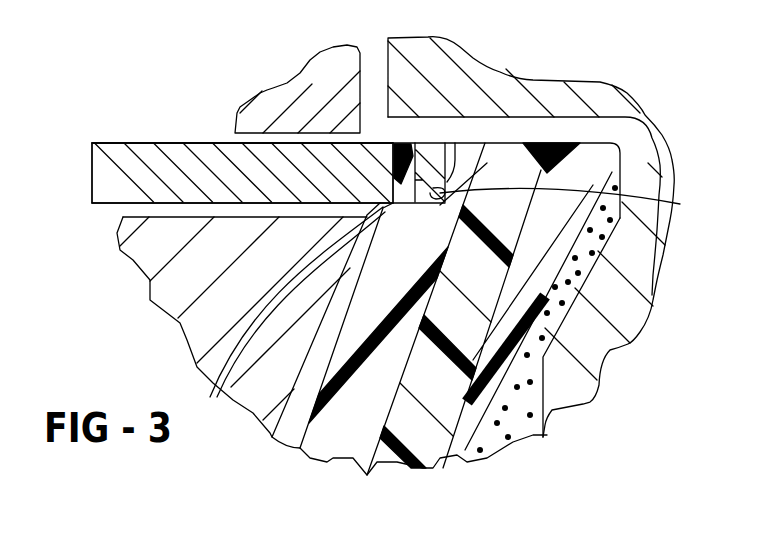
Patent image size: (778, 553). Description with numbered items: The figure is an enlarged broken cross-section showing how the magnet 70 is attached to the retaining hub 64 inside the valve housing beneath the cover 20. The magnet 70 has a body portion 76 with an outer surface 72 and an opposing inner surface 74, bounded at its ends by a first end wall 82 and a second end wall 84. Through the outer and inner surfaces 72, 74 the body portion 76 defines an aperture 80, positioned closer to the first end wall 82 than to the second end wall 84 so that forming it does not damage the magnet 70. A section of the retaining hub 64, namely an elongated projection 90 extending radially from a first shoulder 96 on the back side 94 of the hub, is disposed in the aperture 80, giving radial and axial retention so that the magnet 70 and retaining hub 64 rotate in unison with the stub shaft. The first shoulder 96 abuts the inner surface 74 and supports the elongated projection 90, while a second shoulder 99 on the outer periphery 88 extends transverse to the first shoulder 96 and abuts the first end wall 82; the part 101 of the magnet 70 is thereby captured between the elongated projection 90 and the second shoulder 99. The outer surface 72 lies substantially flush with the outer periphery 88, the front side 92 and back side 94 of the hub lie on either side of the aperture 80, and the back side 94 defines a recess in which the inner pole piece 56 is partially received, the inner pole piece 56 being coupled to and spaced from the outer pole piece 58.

The cover 20 is at (590, 87).
The inner pole piece 56 is at (193, 322).
The outer pole piece 58 is at (340, 63).
The retaining hub 64 is at (465, 421).
The magnet 70 is at (143, 155).
The outer surface 72 is at (160, 143).
The inner surface 74 is at (103, 203).
The body portion 76 is at (167, 193).
The aperture 80 is at (410, 177).
The first end wall 82 is at (572, 202).
The second end wall 84 is at (92, 172).
The outer periphery 88 is at (585, 143).
The elongated projection 90 is at (400, 147).
The front side 92 is at (613, 181).
The back side 94 is at (309, 420).
The first shoulder 96 is at (292, 314).
The second shoulder 99 is at (455, 143).
The part of the magnet 101 is at (430, 193).